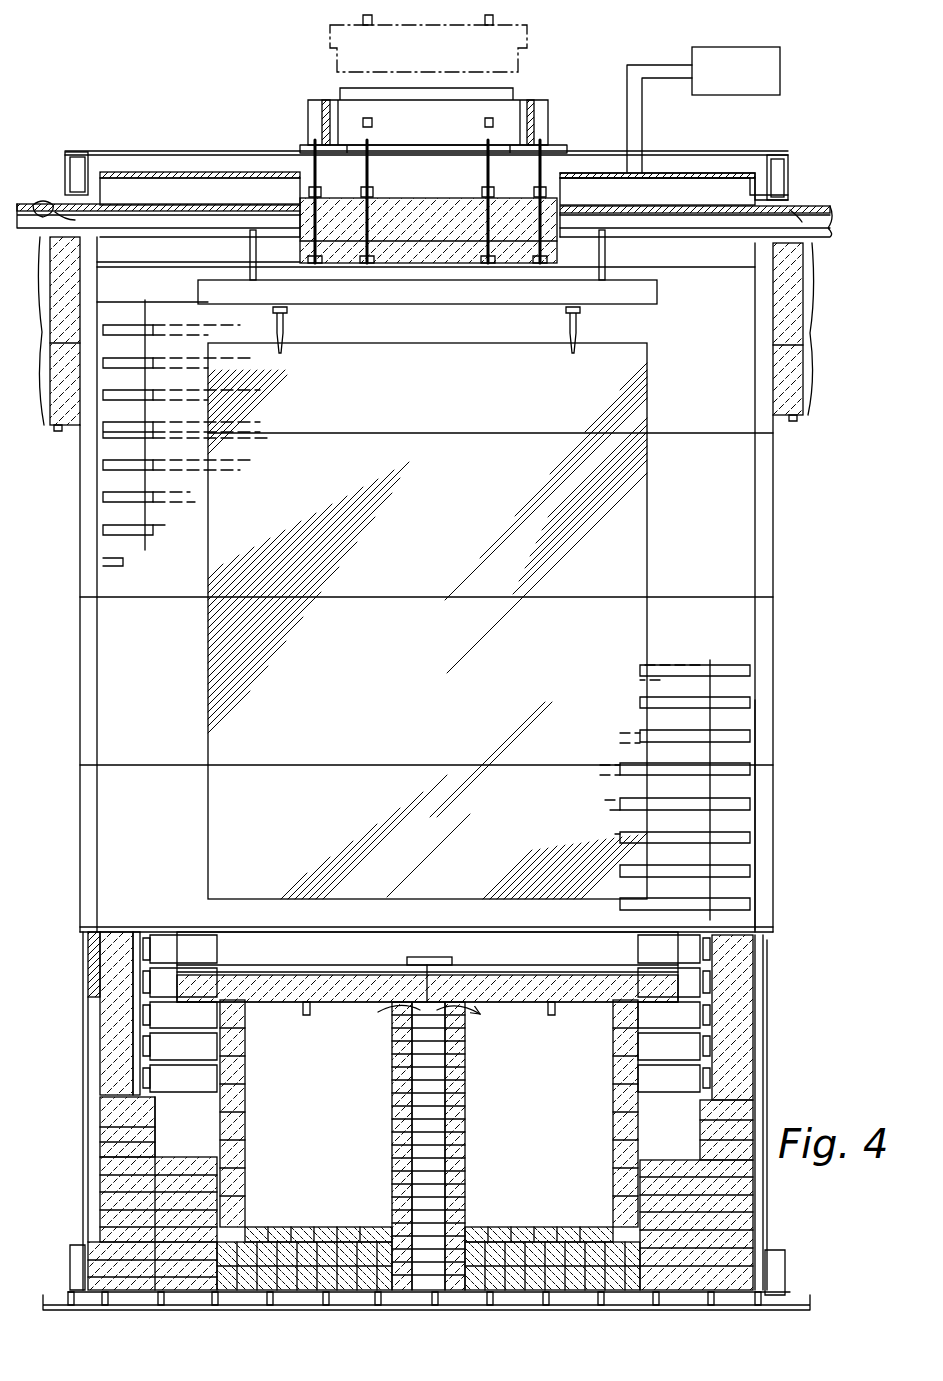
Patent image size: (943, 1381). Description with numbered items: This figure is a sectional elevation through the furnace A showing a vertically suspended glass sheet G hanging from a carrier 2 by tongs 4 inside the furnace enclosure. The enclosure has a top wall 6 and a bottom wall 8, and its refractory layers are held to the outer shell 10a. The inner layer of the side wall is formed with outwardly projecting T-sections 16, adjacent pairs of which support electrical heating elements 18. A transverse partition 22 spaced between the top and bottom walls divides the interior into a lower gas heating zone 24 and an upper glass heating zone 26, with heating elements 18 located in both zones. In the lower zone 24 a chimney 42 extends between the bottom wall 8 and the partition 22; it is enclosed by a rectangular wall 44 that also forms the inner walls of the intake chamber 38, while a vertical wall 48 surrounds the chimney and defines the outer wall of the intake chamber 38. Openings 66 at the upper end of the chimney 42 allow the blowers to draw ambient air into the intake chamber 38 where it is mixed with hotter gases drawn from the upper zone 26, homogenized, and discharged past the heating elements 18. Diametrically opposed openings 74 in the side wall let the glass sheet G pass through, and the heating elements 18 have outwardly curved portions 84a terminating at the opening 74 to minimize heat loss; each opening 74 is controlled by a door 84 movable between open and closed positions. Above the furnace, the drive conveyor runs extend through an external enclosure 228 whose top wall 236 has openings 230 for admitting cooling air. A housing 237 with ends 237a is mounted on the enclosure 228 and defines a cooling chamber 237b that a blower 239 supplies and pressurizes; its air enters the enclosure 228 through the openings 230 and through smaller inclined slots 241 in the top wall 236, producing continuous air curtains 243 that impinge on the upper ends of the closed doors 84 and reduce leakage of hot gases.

The carrier 2 is at (652, 307).
The tongs 4 is at (283, 343).
The top wall 6 is at (433, 210).
The bottom wall 8 is at (541, 1275).
The shell 10a is at (90, 1187).
The T-sections 16 is at (163, 1033).
The electrical heating elements 18 is at (150, 1078).
The transverse partition 22 is at (574, 995).
The lower gas heating zone 24 is at (268, 1026).
The upper glass heating zone 26 is at (725, 585).
The intake chamber 38 is at (323, 1026).
The chimney 42 is at (437, 1143).
The rectangular wall 44 is at (460, 1088).
The vertical wall 48 is at (238, 1183).
The openings 66 is at (397, 1022).
The openings 74 is at (92, 657).
The door 84 is at (57, 430).
The outwardly curved portions 84a is at (103, 495).
The external enclosure 228 is at (235, 200).
The openings 230 is at (147, 222).
The top wall 236 is at (697, 213).
The housing 237 is at (585, 177).
The ends 237a is at (40, 198).
The cooling chamber 237b is at (662, 172).
The blower 239 is at (775, 57).
The slots 241 is at (32, 202).
The air curtain 243 is at (55, 215).
The furnace A is at (720, 152).
The glass sheet G is at (628, 535).